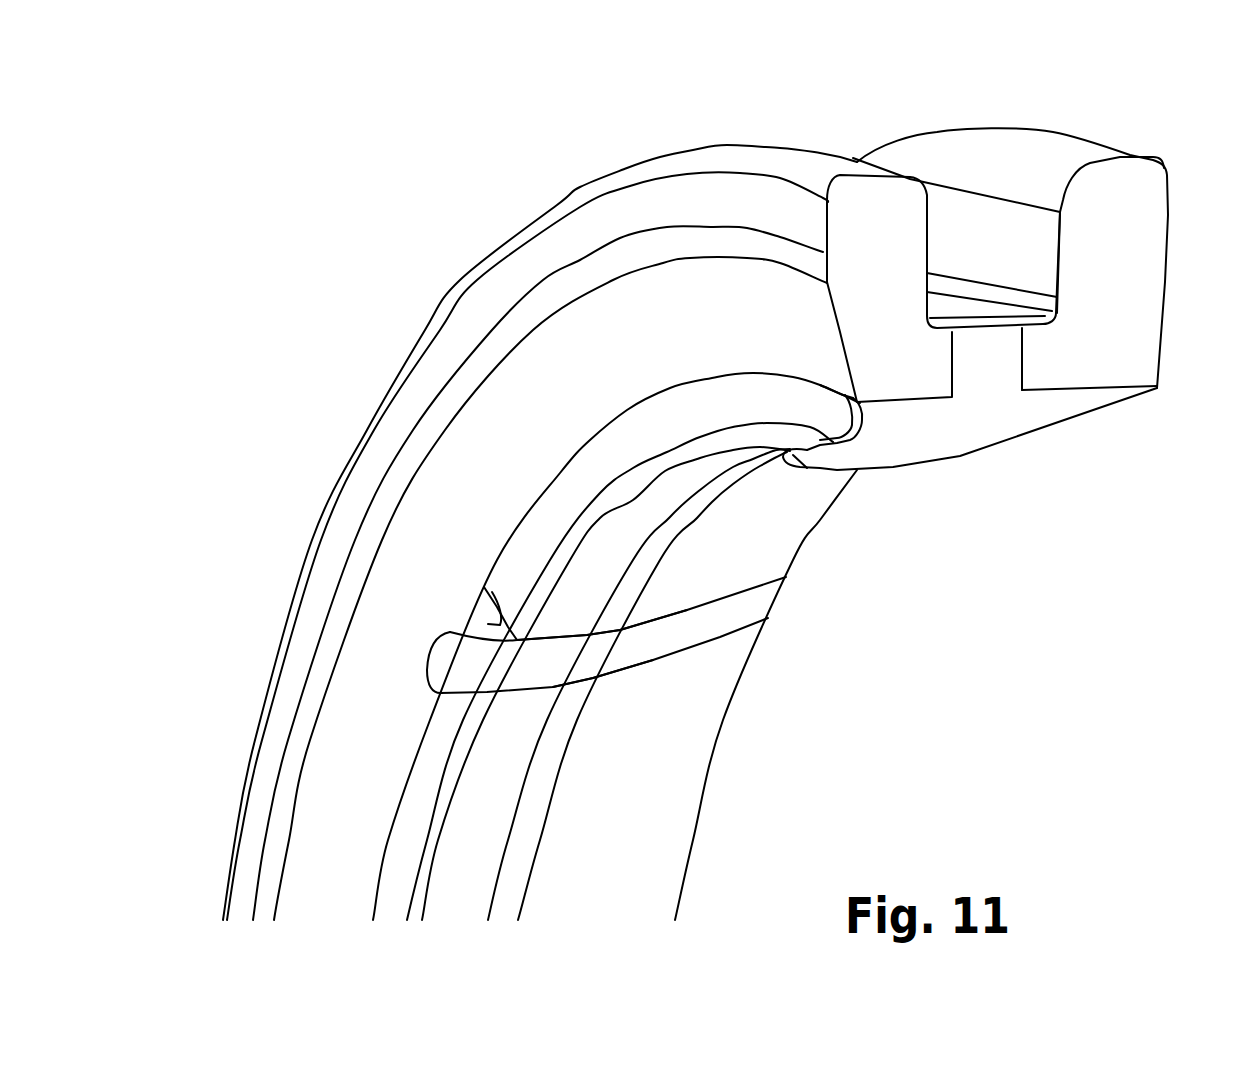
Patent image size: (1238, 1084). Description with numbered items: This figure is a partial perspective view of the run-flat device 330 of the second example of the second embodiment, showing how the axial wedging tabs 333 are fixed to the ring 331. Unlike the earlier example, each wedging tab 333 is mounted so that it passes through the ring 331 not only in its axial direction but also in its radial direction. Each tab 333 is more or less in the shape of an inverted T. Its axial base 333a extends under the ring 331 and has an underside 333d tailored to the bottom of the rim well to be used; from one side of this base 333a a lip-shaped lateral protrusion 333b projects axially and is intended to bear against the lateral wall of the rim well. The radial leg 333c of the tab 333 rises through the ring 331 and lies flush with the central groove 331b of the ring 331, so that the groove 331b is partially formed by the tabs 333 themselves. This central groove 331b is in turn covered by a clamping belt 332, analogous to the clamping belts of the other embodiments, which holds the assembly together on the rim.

The run-flat device 330 is at (519, 146).
The ring 331 is at (1112, 132).
The clamping belt 332 is at (948, 311).
The central groove 331b is at (1062, 313).
The radial leg 333c is at (1000, 348).
The axial base 333a is at (953, 437).
The axial wedging tab 333 is at (1031, 438).
The lip-shaped lateral protrusion 333b is at (813, 460).
The underside 333d is at (650, 643).